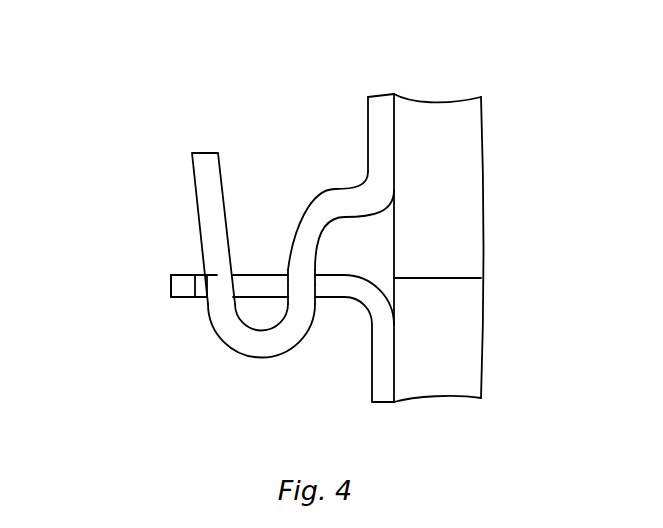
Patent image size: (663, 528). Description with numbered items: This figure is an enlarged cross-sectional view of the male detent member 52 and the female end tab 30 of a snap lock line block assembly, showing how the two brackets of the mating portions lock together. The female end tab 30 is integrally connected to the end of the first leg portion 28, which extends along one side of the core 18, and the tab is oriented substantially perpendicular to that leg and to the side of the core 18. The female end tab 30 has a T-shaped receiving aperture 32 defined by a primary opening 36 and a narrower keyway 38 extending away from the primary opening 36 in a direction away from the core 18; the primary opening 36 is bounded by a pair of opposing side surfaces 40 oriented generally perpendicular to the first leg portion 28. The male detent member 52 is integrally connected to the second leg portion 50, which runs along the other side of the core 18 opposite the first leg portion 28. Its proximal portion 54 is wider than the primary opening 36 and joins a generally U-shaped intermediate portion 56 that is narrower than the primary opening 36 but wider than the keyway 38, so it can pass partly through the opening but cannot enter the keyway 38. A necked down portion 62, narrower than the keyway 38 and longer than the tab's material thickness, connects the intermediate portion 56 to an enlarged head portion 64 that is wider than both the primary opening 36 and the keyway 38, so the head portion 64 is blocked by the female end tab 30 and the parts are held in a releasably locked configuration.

The core 18 is at (468, 113).
The first leg portion 28 is at (387, 388).
The female end tab 30 is at (172, 283).
The T-shaped receiving aperture 32 is at (263, 301).
The primary opening 36 is at (282, 305).
The keyway 38 is at (172, 292).
The side surfaces 40 is at (277, 262).
The second leg portion 50 is at (380, 112).
The male detent member 52 is at (185, 140).
The proximal portion 54 is at (353, 198).
The U-shaped intermediate portion 56 is at (273, 283).
The necked down portion 62 is at (200, 279).
The enlarged head portion 64 is at (219, 153).